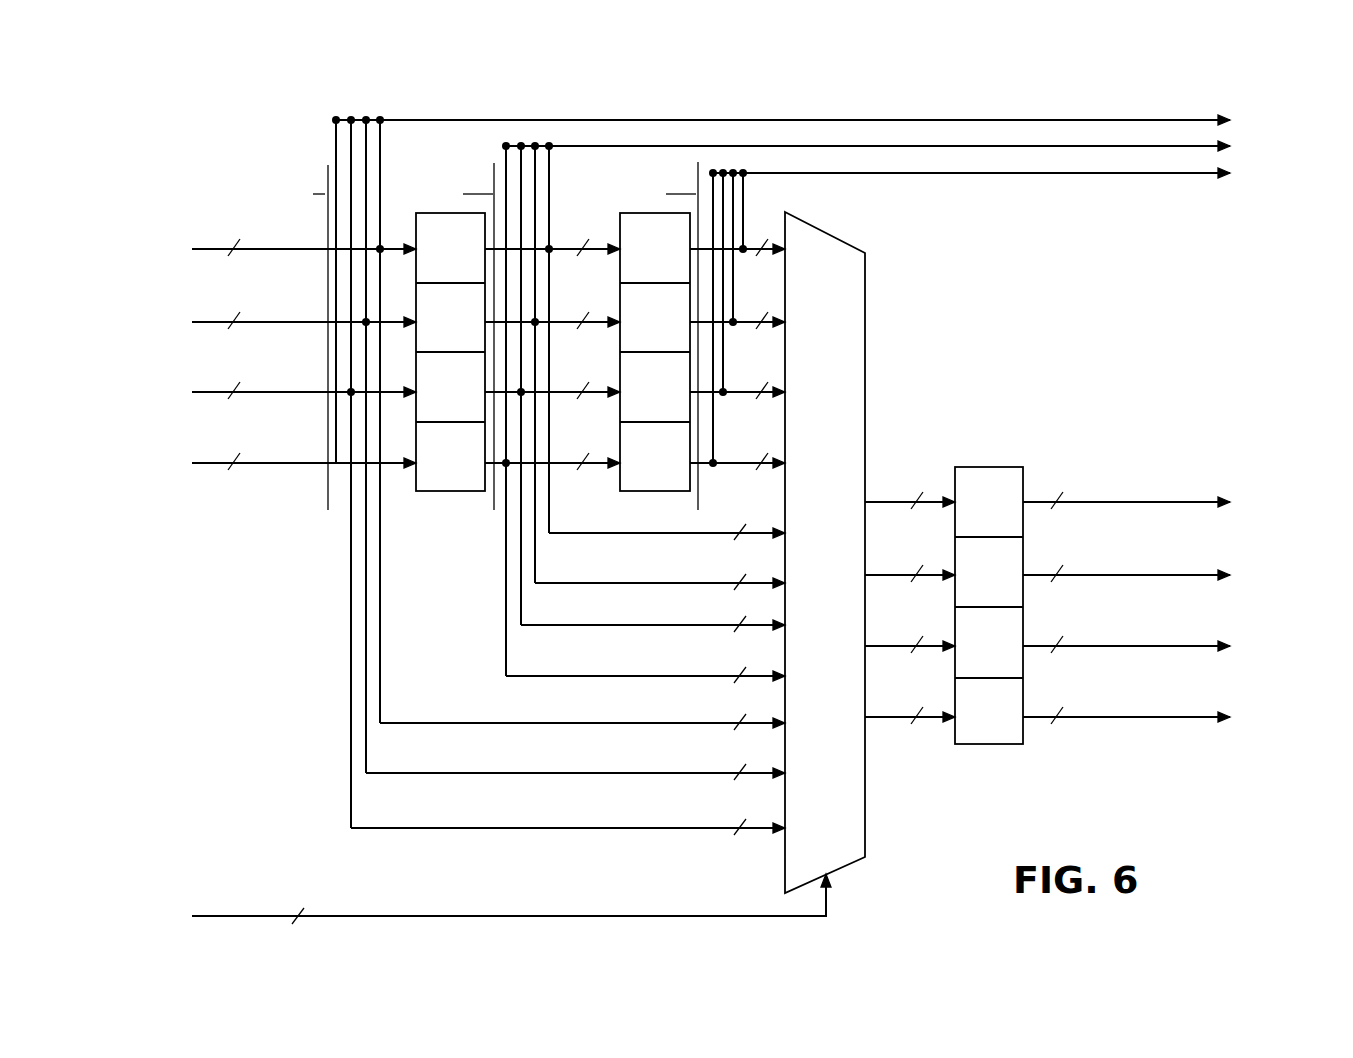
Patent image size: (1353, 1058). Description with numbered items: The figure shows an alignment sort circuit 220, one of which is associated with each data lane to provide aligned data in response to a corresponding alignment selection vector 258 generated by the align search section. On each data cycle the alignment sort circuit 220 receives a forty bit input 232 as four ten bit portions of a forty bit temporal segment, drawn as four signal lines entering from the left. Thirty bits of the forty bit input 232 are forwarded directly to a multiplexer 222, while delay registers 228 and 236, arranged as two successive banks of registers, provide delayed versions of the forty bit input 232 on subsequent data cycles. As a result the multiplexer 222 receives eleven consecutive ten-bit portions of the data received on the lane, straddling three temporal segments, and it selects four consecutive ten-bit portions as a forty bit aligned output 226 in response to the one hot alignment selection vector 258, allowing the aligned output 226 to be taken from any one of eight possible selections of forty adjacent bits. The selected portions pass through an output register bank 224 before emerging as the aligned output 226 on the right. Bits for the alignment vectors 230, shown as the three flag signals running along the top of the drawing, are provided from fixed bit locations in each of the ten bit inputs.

The alignment sort circuit 220 is at (977, 279).
The multiplexer 222 is at (866, 354).
The output register bank 224 is at (968, 466).
The aligned output 226 is at (1257, 578).
The delay register 228 is at (432, 212).
The alignment vectors 230 is at (1245, 160).
The forty bit input 232 is at (124, 310).
The delay register 236 is at (636, 213).
The alignment selection vector 258 is at (183, 873).